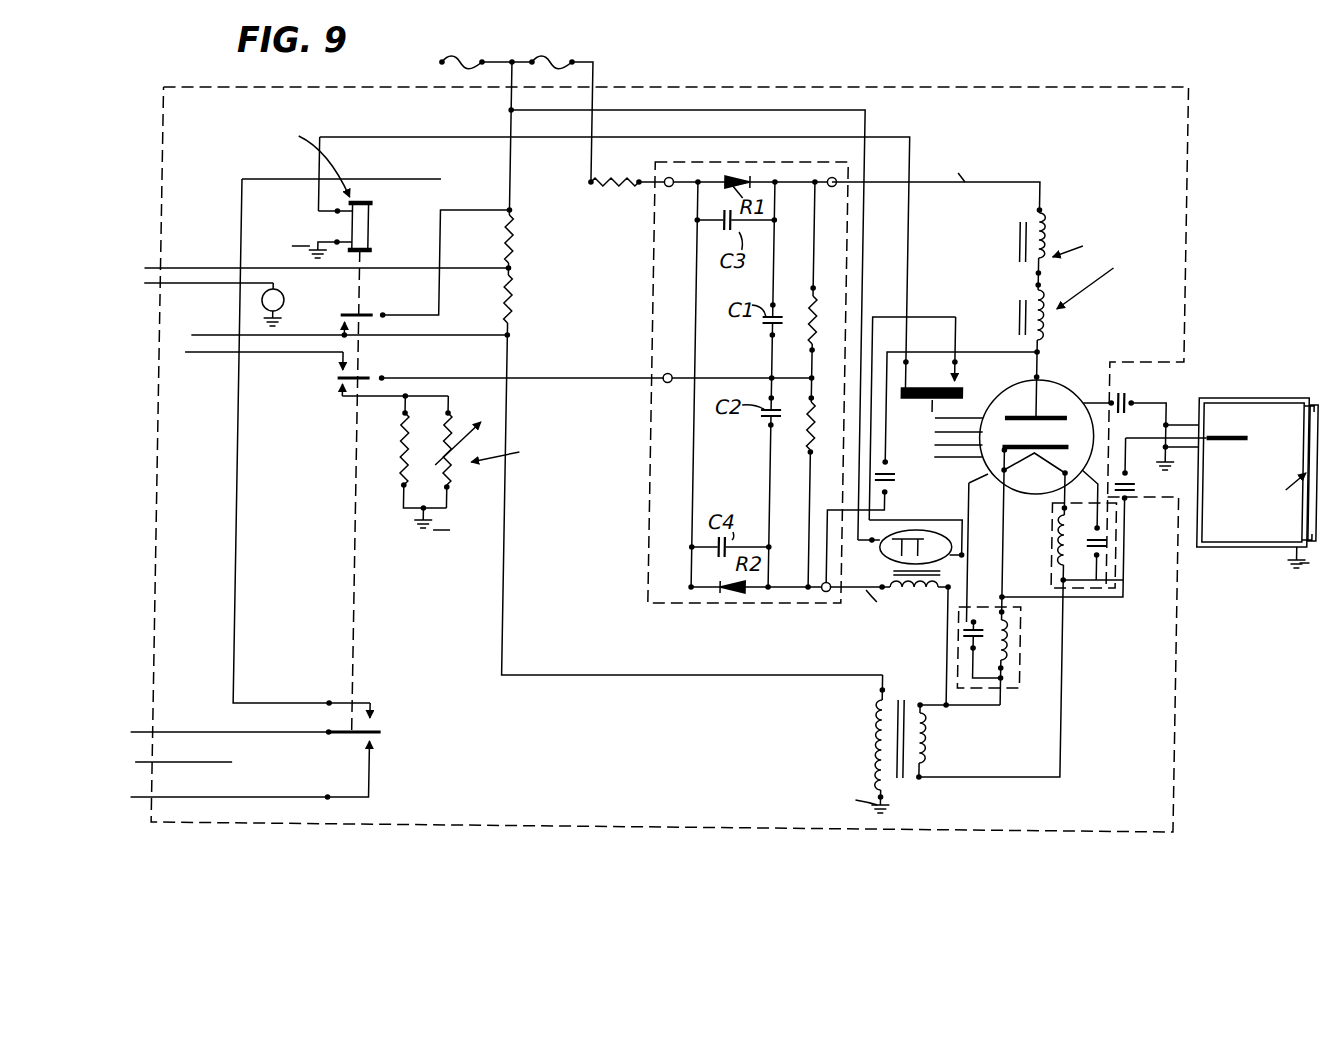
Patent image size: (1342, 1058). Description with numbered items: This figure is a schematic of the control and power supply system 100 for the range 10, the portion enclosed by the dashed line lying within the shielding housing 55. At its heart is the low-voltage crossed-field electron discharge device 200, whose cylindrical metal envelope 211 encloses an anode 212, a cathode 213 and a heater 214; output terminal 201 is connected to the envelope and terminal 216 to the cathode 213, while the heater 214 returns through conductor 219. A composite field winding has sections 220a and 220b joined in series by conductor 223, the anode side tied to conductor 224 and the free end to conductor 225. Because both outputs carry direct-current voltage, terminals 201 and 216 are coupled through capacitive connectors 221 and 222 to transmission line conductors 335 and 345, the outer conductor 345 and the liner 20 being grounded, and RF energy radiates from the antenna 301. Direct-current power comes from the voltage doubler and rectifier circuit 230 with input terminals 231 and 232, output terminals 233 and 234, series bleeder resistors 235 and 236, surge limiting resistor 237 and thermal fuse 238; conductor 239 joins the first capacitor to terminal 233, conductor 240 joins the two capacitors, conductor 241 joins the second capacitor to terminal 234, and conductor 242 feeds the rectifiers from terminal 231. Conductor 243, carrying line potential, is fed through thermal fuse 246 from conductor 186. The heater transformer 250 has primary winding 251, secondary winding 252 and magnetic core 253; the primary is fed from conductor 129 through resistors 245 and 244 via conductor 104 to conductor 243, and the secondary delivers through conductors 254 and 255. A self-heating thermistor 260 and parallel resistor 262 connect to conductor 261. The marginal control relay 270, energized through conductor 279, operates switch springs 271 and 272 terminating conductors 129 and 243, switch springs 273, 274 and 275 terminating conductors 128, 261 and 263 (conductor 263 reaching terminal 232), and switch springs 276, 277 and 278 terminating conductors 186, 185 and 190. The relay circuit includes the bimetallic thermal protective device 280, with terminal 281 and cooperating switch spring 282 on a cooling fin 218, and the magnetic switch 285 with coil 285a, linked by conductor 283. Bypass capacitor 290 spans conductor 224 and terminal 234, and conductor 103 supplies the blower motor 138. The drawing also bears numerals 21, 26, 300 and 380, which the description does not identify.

The range 10 is at (1329, 386).
The liner 20 is at (1251, 551).
The cooking chamber 21 is at (1258, 531).
The door 26 is at (1313, 452).
The housing 55 is at (1041, 85).
The control and power supply system 100 is at (682, 66).
The conductor 103 is at (226, 284).
The conductor 104 is at (233, 268).
The conductor 128 is at (230, 352).
The conductor 129 is at (230, 335).
The blower motor 138 is at (289, 297).
The conductor 185 is at (233, 797).
The conductor 186 is at (301, 177).
The conductor 190 is at (227, 732).
The crossed-field electron discharge device 200 is at (1084, 383).
The output terminal 201 is at (1047, 379).
The envelope 211 is at (976, 483).
The anode 212 is at (1042, 399).
The cathode 213 is at (1046, 445).
The heater 214 is at (1033, 523).
The output terminal 216 is at (1012, 596).
The cooling fin 218 is at (944, 432).
The conductor 219 is at (1040, 528).
The field winding section 220a is at (1050, 326).
The field winding section 220b is at (1047, 236).
The capacitive connector 221 is at (1134, 401).
The capacitive connector 222 is at (1136, 496).
The conductor 223 is at (1045, 280).
The conductor 224 is at (1047, 362).
The conductor 225 is at (1043, 200).
The voltage doubler and rectifier circuit 230 is at (773, 155).
The input terminal 231 is at (672, 187).
The input terminal 232 is at (674, 384).
The output terminal 233 is at (840, 186).
The output terminal 234 is at (836, 592).
The bleeder resistor 235 is at (799, 327).
The bleeder resistor 236 is at (815, 440).
The surge limiting resistor 237 is at (620, 187).
The thermal fuse 238 is at (553, 50).
The conductor 239 is at (800, 262).
The conductor 240 is at (775, 378).
The conductor 241 is at (796, 591).
The conductor 242 is at (700, 287).
The conductor 243 is at (510, 186).
The resistor 244 is at (516, 247).
The resistor 245 is at (516, 298).
The thermal fuse 246 is at (462, 58).
The transformer 250 is at (920, 781).
The primary winding 251 is at (886, 744).
The secondary winding 252 is at (937, 733).
The magnetic core 253 is at (913, 696).
The conductor 254 is at (996, 705).
The conductor 255 is at (1012, 777).
The thermistor 260 is at (462, 427).
The conductor 261 is at (418, 397).
The resistor 262 is at (408, 437).
The conductor 263 is at (633, 378).
The marginal control relay 270 is at (372, 223).
The switch spring 271 is at (346, 318).
The switch spring 272 is at (372, 316).
The switch spring 273 is at (357, 362).
The switch spring 274 is at (346, 390).
The switch spring 275 is at (343, 374).
The switch spring 276 is at (385, 713).
The switch spring 277 is at (385, 758).
The switch spring 278 is at (393, 734).
The conductor 279 is at (367, 138).
The thermal protective device 280 is at (939, 378).
The terminal 281 is at (905, 390).
The switch spring 282 is at (967, 375).
The conductor 283 is at (877, 316).
The magnetic switch 285 is at (906, 530).
The coil 285a is at (934, 597).
The bypass capacitor 290 is at (902, 478).
The waveguide 300 is at (1185, 419).
The antenna 301 is at (1237, 440).
The transmission line conductor 335 is at (1145, 439).
The outer conductor 345 is at (1206, 425).
The filter network 380 is at (1036, 682).